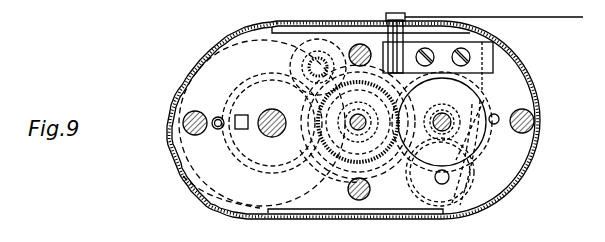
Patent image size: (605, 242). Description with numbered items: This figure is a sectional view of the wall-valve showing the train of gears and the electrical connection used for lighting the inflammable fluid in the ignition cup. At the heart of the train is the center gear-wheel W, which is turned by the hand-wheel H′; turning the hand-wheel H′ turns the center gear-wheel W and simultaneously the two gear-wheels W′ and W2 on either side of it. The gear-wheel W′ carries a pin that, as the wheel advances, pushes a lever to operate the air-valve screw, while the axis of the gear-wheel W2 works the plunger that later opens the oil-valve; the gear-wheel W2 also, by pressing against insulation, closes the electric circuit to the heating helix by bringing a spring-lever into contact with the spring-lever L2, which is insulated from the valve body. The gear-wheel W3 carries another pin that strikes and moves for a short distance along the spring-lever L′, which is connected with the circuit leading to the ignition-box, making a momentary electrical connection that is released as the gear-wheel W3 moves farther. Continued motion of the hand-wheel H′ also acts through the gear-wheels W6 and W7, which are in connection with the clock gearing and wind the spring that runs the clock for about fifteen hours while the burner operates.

The center gear-wheel W is at (372, 59).
The gear-wheel W′ is at (489, 101).
The gear-wheel W2 is at (234, 153).
The gear-wheel W3 is at (452, 199).
The gear-wheel W6 is at (318, 50).
The gear-wheel W7 is at (276, 98).
The spring-lever L′ is at (480, 144).
The spring-lever L2 is at (494, 46).
The hand-wheel H′ is at (338, 172).